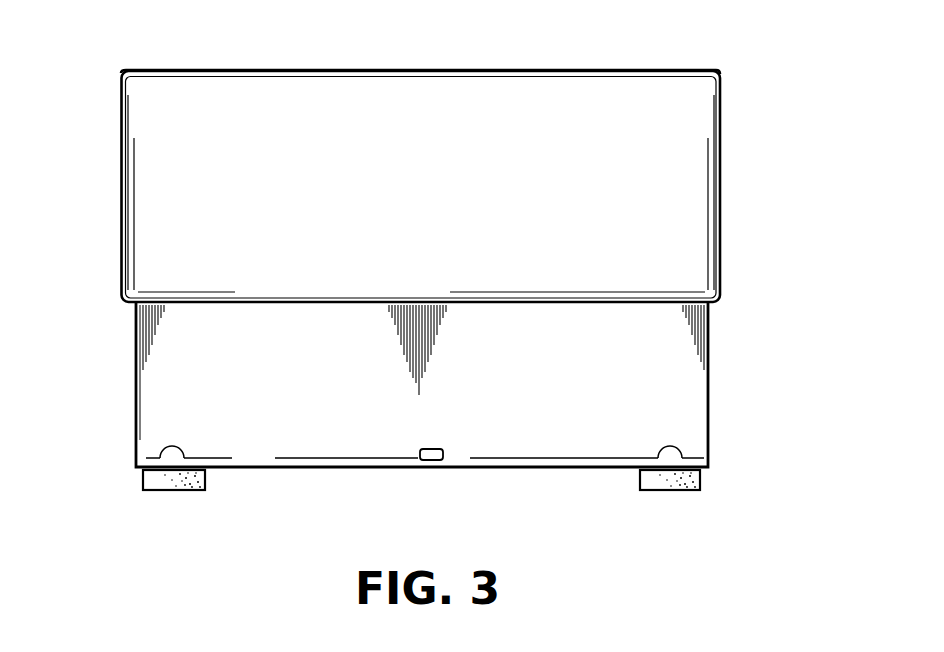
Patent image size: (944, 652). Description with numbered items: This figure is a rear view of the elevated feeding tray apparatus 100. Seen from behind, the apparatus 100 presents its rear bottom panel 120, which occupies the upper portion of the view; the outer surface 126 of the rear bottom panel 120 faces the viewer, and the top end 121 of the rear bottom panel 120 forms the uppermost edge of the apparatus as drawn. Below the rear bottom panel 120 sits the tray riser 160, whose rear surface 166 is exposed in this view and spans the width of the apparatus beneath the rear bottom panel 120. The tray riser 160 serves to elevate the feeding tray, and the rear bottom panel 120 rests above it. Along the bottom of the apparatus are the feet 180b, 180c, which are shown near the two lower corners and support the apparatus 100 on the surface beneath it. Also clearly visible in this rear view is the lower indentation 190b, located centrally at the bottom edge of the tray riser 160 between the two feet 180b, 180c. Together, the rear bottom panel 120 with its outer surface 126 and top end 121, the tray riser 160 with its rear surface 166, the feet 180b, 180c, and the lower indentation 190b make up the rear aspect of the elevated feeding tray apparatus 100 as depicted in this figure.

The elevated feeding tray apparatus 100 is at (772, 292).
The rear bottom panel 120 is at (672, 180).
The top end 121 is at (400, 75).
The outer surface 126 is at (424, 214).
The tray riser 160 is at (163, 372).
The rear surface 166 is at (306, 386).
The foot 180b is at (722, 485).
The foot 180c is at (141, 506).
The lower indentation 190b is at (431, 452).